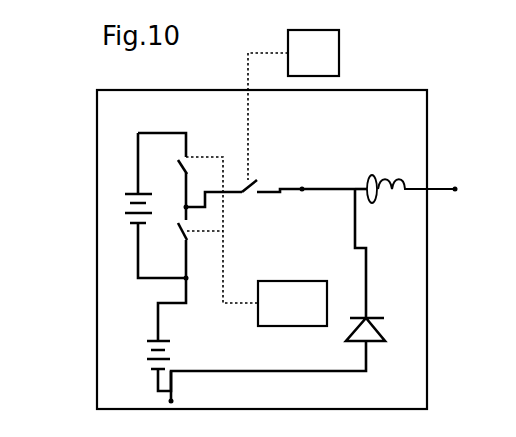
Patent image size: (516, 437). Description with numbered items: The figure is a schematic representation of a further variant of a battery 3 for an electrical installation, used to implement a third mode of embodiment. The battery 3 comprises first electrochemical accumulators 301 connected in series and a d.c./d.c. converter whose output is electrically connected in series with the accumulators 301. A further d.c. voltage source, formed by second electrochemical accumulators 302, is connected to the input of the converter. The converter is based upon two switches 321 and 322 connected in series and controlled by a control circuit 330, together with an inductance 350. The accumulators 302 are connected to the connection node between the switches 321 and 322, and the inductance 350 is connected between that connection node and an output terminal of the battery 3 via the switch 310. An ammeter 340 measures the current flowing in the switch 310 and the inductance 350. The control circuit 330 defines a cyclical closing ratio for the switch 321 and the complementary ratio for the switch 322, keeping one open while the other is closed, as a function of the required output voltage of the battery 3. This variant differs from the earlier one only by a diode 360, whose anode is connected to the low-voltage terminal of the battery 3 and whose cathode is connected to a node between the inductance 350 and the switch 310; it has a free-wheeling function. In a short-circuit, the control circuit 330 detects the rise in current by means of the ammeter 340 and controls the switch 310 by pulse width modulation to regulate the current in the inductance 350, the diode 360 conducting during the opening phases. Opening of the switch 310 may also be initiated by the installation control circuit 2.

The control circuit 2 is at (293, 105).
The battery 3 is at (97, 248).
The first electrochemical accumulators 301 is at (145, 353).
The second electrochemical accumulators 302 is at (125, 208).
The switch 310 is at (258, 197).
The switch 321 is at (178, 165).
The switch 322 is at (178, 231).
The control circuit 330 is at (256, 241).
The ammeter 340 is at (370, 180).
The inductance 350 is at (386, 182).
The diode 360 is at (386, 328).